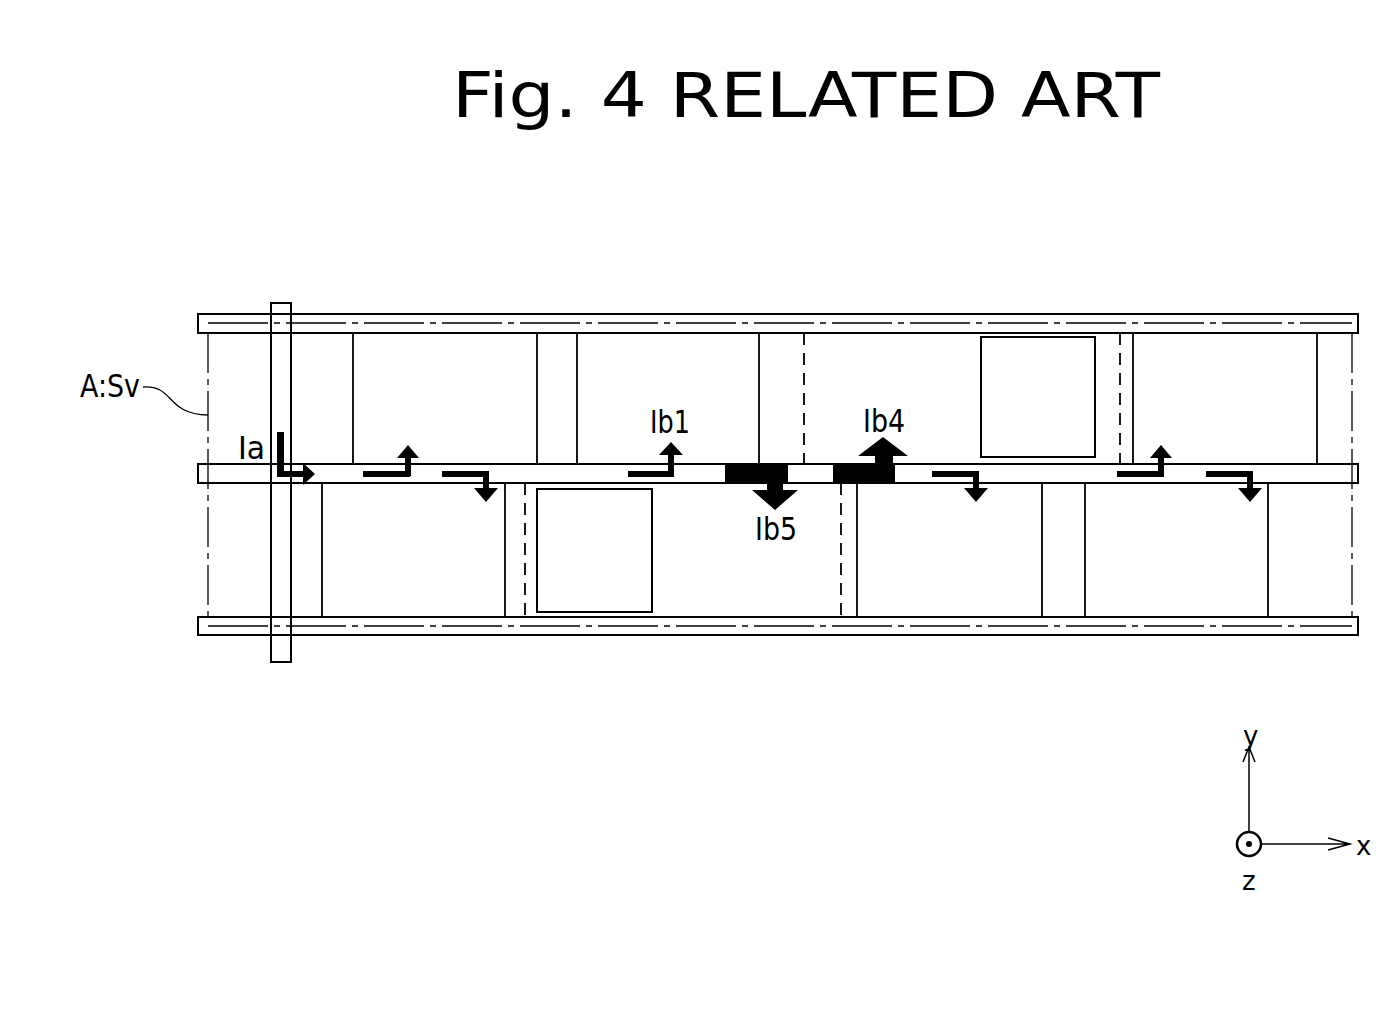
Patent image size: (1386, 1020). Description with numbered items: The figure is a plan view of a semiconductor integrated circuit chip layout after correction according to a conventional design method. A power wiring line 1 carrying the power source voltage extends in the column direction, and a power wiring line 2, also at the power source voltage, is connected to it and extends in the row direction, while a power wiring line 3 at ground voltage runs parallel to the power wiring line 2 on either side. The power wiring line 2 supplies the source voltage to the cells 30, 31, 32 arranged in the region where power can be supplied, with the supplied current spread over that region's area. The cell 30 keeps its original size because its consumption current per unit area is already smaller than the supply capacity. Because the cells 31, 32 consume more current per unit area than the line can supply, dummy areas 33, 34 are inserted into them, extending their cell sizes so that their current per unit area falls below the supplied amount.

The power wiring line 1 is at (280, 663).
The power wiring line 2 is at (199, 484).
The power wiring line 3 is at (199, 312).
The cell 30 is at (652, 342).
The cell 31 is at (880, 342).
The cell 32 is at (713, 607).
The dummy area 33 is at (1037, 340).
The dummy area 34 is at (594, 607).